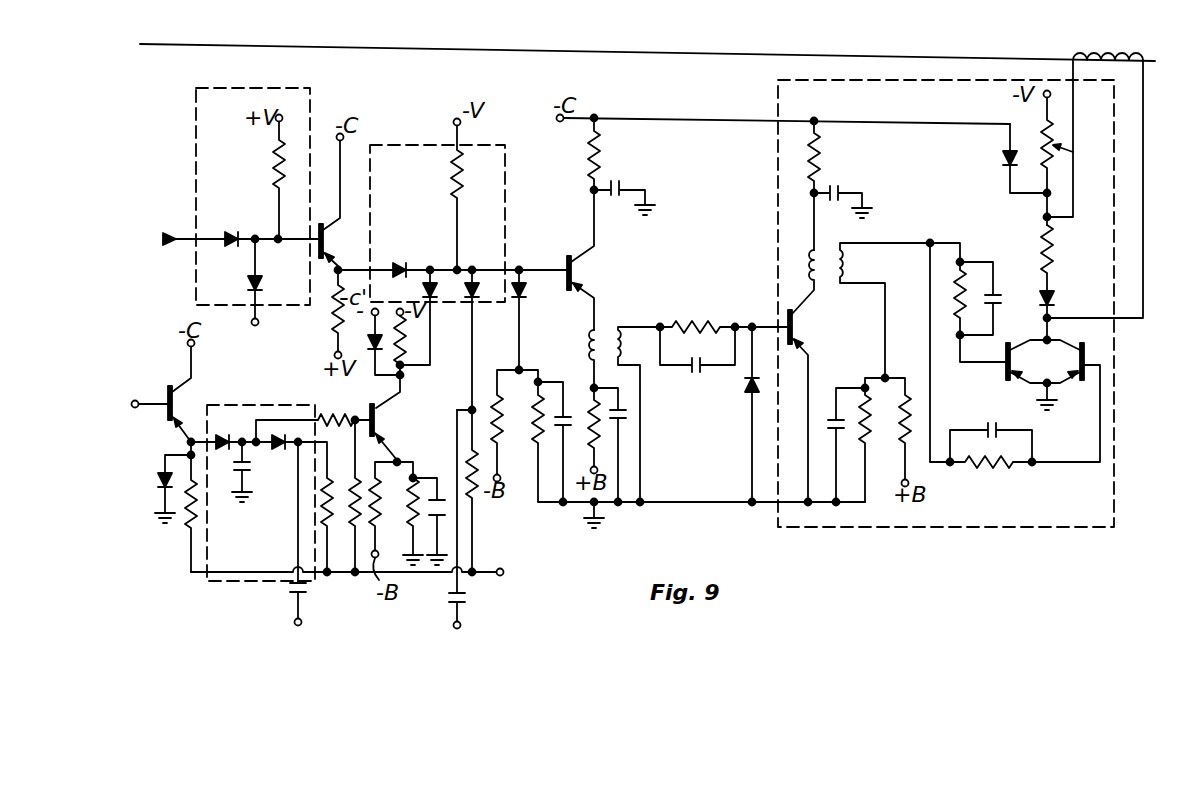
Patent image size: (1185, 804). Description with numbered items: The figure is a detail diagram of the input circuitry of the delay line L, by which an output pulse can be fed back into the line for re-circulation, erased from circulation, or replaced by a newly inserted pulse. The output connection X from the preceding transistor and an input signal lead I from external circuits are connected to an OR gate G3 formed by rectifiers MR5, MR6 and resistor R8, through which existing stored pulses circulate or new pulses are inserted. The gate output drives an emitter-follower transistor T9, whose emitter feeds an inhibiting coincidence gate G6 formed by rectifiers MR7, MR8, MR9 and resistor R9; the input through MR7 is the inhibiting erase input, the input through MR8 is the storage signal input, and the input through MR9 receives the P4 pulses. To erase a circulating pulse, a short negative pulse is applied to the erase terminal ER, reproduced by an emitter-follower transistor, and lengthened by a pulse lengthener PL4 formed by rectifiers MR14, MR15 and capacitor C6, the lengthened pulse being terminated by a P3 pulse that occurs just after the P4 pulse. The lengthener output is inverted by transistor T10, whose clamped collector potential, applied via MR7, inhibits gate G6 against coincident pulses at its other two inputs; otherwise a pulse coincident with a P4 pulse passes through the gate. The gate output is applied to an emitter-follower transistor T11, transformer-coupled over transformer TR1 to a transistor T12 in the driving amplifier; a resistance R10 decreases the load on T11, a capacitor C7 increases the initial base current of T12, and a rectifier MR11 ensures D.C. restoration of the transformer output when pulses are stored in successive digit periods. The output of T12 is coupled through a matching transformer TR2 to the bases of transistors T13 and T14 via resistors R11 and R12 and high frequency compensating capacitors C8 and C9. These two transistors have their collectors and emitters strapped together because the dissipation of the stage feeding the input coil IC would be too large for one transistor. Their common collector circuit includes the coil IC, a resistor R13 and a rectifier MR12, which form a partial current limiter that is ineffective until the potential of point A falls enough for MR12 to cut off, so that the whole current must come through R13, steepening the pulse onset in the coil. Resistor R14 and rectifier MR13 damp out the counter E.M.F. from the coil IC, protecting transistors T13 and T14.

The delay line L is at (723, 57).
The OR gate G3 is at (268, 90).
The resistor R8 is at (264, 177).
The output connection X is at (238, 226).
The rectifier MR5 is at (232, 224).
The rectifier MR6 is at (233, 278).
The input signal lead I is at (261, 329).
The emitter-follower transistor T9 is at (341, 200).
The inhibiting coincidence gate G6 is at (410, 157).
The resistor R9 is at (474, 195).
The rectifier MR8 is at (417, 257).
The rectifier MR7 is at (408, 317).
The rectifier MR9 is at (478, 287).
The transistor T10 is at (393, 432).
The pulse lengthener PL4 is at (245, 415).
The erase terminal ER is at (163, 391).
The rectifier MR14 is at (230, 439).
The capacitor C6 is at (234, 472).
The rectifier MR15 is at (281, 448).
The P3 pulse P3 is at (330, 539).
The P4 pulse P4 is at (483, 525).
The emitter-follower transistor T11 is at (596, 261).
The transformer TR1 is at (624, 404).
The resistance R10 is at (724, 315).
The capacitor C7 is at (697, 364).
The rectifier MR11 is at (750, 384).
The matching transformer TR2 is at (861, 310).
The transistor T12 is at (798, 406).
The resistor R11 is at (958, 308).
The high frequency compensating capacitor C8 is at (995, 298).
The transistor T13 is at (1023, 350).
The transistor T14 is at (1081, 392).
The high frequency compensating capacitor C9 is at (991, 430).
The resistor R12 is at (991, 480).
The rectifier MR12 is at (998, 158).
The resistor R13 is at (1081, 145).
The point A is at (1030, 211).
The resistor R14 is at (1070, 258).
The rectifier MR13 is at (1079, 315).
The input coil IC is at (1108, 65).